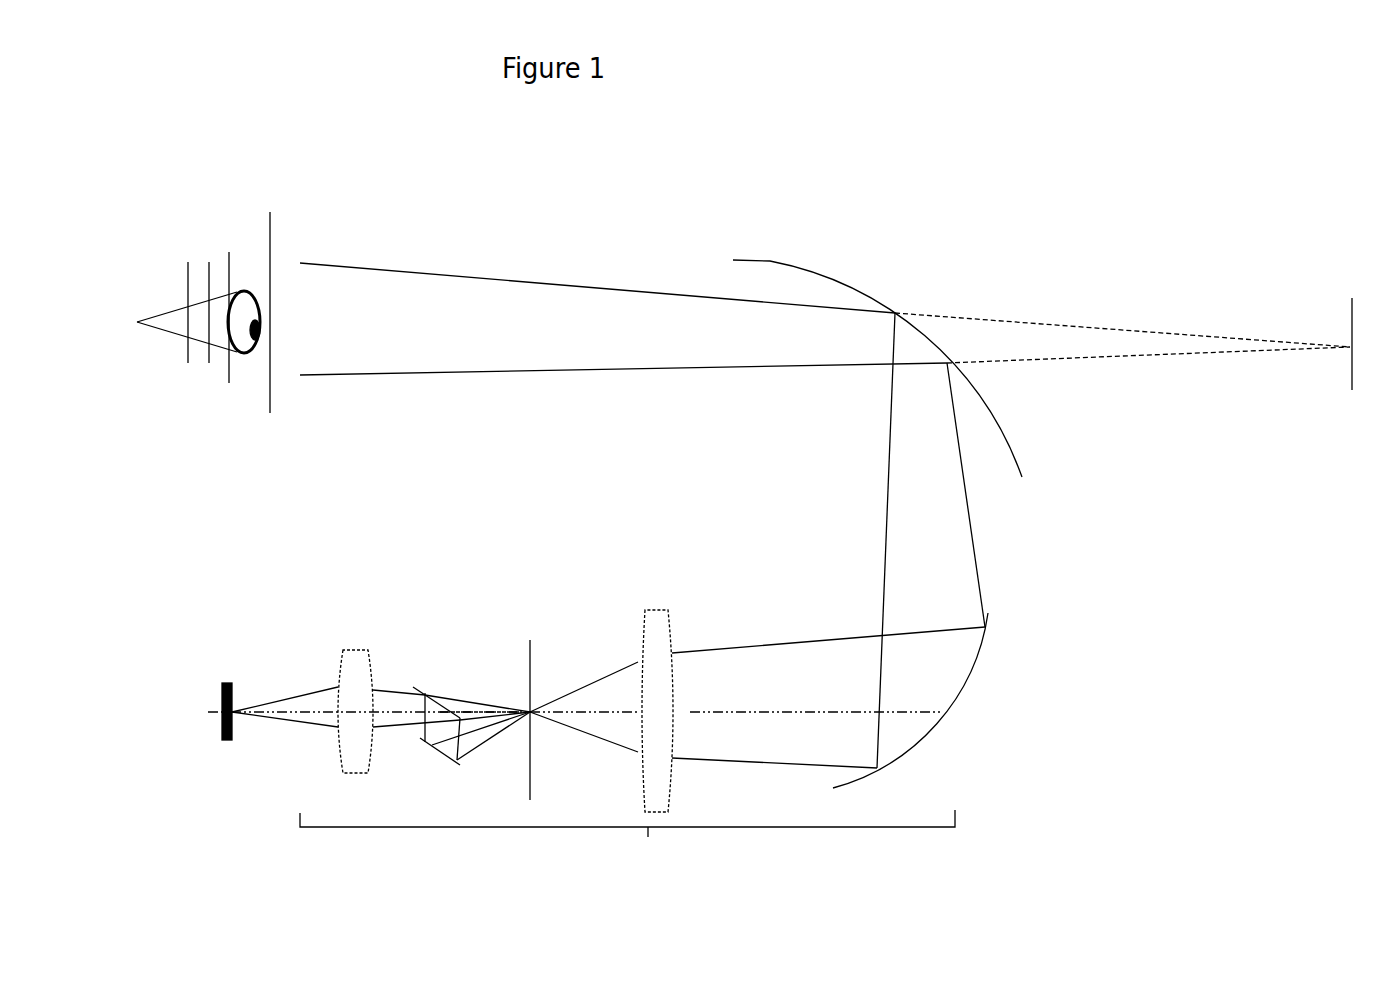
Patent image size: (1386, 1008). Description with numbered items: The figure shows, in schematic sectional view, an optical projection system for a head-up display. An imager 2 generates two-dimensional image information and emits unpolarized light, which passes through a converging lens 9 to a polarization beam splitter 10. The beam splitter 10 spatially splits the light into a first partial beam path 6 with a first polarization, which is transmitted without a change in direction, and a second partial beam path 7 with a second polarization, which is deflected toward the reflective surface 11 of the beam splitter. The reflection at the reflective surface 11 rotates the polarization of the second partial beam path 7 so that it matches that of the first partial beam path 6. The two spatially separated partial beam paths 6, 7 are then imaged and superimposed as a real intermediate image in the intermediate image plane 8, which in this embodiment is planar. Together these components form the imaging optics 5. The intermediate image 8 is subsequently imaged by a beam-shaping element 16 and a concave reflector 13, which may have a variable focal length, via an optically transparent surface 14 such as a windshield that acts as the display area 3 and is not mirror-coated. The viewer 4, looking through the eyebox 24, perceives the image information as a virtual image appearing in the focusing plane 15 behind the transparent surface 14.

The imager 2 is at (227, 744).
The display area 3 is at (778, 258).
The viewer 4 is at (208, 375).
The imaging optics 5 is at (627, 840).
The first partial beam path 6 is at (477, 708).
The second partial beam path 7 is at (463, 763).
The intermediate image plane 8 is at (528, 780).
The converging lens 9 is at (352, 757).
The polarization beam splitter 10 is at (420, 676).
The reflective surface 11 is at (433, 747).
The concave reflector 13 is at (968, 680).
The optically transparent surface 14 is at (800, 256).
The focusing plane 15 is at (1340, 287).
The beam-shaping element 16 is at (640, 783).
The eyebox 24 is at (270, 200).